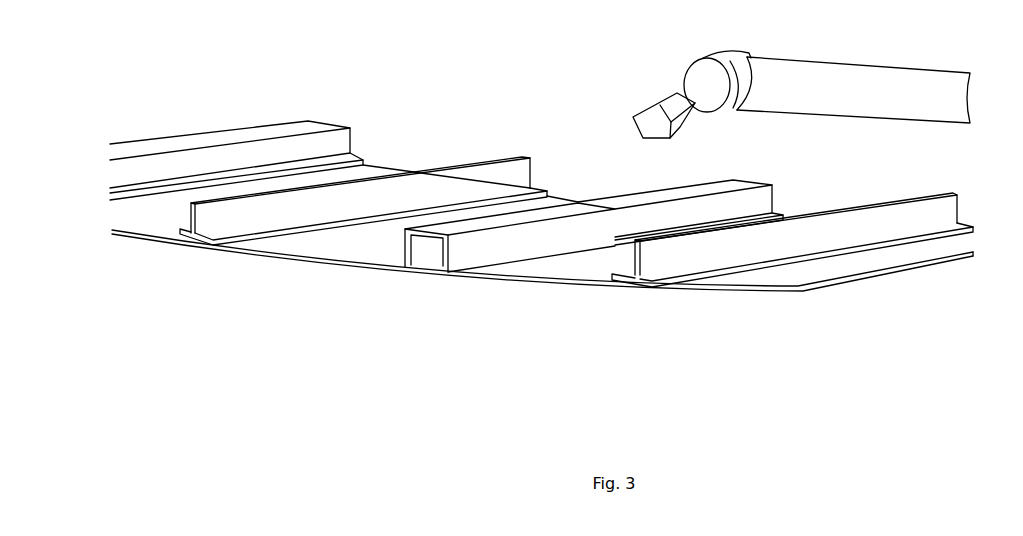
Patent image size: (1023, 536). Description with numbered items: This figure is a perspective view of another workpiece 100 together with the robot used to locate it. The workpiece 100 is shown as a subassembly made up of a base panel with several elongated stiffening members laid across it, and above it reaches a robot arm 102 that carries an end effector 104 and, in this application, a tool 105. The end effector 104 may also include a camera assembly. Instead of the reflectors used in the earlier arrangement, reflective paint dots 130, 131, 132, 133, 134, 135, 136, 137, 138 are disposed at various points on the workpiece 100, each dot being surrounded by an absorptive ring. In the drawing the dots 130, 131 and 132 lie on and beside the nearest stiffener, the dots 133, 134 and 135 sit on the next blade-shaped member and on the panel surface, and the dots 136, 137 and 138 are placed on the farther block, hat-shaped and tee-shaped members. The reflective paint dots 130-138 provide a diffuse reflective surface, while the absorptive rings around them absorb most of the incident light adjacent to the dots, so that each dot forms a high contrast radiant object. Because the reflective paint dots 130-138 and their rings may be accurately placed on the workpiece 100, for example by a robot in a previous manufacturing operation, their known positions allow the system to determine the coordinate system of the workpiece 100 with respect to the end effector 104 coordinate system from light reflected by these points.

The workpiece 100 is at (190, 98).
The robot arm 102 is at (820, 60).
The end effector 104 is at (674, 93).
The tool 105 is at (638, 118).
The reflective paint dot 130 is at (329, 147).
The reflective paint dot 131 is at (138, 173).
The reflective paint dot 132 is at (133, 218).
The reflective paint dot 133 is at (498, 176).
The reflective paint dot 134 is at (228, 215).
The reflective paint dot 135 is at (333, 250).
The reflective paint dot 136 is at (743, 203).
The reflective paint dot 137 is at (487, 244).
The reflective paint dot 138 is at (566, 267).